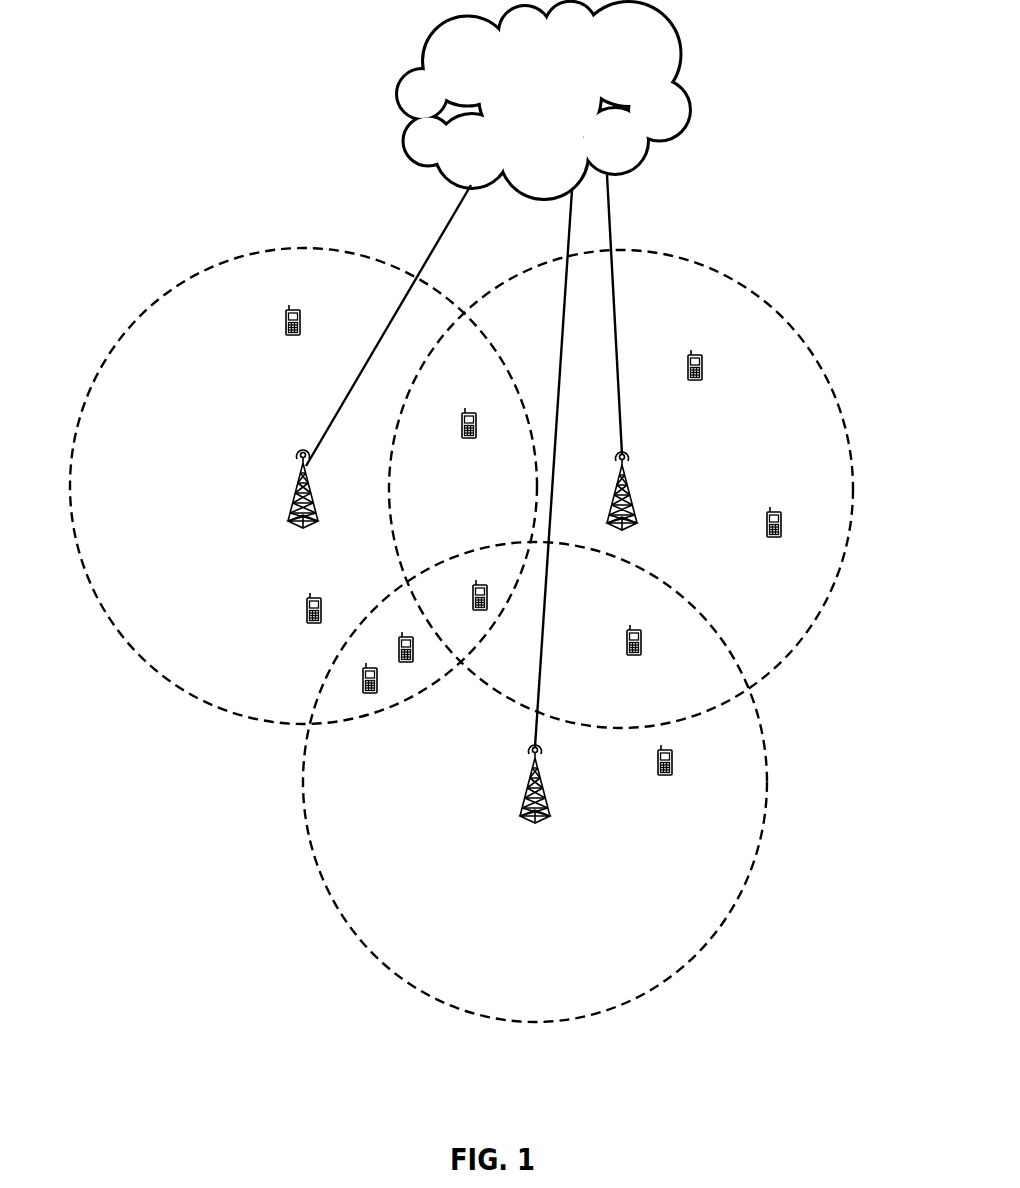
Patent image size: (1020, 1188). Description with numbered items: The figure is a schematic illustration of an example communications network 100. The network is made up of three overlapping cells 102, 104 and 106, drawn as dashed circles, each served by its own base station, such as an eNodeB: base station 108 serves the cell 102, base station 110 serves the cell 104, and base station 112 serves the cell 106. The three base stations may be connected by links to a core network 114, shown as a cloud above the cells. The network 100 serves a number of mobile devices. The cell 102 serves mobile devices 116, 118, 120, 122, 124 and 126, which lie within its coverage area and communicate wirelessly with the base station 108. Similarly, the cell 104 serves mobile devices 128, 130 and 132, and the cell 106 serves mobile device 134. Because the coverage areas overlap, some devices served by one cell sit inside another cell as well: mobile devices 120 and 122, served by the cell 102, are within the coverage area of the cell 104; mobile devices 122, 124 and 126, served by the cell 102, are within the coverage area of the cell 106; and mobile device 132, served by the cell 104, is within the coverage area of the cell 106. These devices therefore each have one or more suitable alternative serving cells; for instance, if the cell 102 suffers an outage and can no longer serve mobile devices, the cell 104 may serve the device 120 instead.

The communications network 100 is at (508, 1108).
The cell 102 is at (165, 682).
The cell 104 is at (807, 633).
The cell 106 is at (318, 870).
The base station 108 is at (292, 522).
The base station 110 is at (635, 520).
The base station 112 is at (527, 815).
The core network 114 is at (673, 130).
The mobile device 116 is at (292, 335).
The mobile device 118 is at (315, 623).
The mobile device 120 is at (475, 437).
The mobile device 122 is at (487, 610).
The mobile device 124 is at (376, 693).
The mobile device 126 is at (413, 662).
The mobile device 128 is at (702, 380).
The mobile device 130 is at (770, 537).
The mobile device 132 is at (641, 650).
The mobile device 134 is at (665, 775).